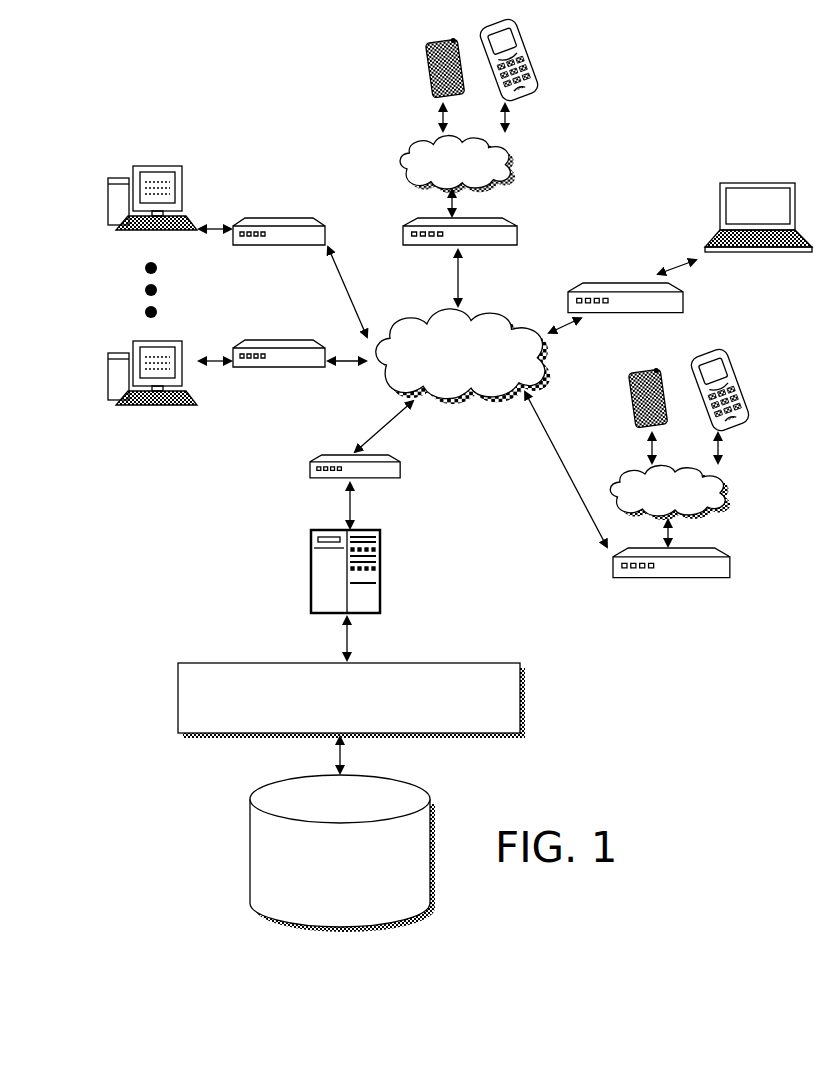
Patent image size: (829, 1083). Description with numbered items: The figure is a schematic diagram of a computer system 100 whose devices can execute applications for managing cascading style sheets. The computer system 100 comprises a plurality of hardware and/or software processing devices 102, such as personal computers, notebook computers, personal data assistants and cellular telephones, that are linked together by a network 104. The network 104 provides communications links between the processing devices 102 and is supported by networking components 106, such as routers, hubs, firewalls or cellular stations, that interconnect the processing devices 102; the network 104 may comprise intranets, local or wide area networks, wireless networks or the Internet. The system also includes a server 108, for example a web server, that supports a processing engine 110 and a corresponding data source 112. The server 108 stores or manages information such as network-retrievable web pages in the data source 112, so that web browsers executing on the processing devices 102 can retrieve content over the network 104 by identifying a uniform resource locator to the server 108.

The computer system 100 is at (672, 68).
The processing device 102 is at (418, 62).
The network 104 is at (518, 165).
The networking component 106 is at (418, 248).
The server 108 is at (308, 588).
The processing engine 110 is at (178, 683).
The data source 112 is at (250, 848).